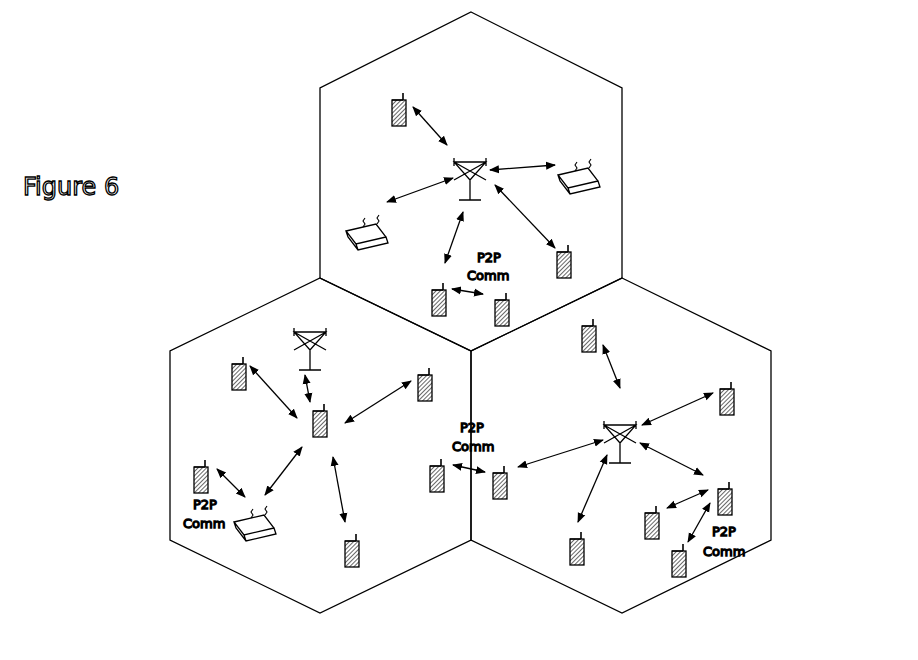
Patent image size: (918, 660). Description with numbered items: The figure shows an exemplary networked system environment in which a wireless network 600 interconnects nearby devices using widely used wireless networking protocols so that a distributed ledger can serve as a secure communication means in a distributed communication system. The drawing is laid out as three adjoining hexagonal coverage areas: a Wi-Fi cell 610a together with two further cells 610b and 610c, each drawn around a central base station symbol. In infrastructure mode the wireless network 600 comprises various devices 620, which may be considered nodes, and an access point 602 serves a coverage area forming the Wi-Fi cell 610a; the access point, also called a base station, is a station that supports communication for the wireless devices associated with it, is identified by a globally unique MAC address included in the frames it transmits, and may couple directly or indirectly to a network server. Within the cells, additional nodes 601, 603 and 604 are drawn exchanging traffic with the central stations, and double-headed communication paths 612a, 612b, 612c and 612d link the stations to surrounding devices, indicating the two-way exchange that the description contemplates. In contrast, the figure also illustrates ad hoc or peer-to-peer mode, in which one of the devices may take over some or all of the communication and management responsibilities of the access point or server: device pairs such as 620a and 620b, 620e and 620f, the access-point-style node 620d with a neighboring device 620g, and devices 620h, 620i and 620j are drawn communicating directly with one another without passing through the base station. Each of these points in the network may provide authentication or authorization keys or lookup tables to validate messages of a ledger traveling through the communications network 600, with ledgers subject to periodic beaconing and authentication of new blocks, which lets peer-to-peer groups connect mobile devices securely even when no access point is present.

The wireless network 600 is at (722, 58).
The user equipment 601 is at (232, 372).
The access point 602 is at (433, 385).
The user equipment 603 is at (360, 547).
The user equipment 604 is at (328, 417).
The Wi-Fi cell 610a is at (465, 159).
The base station 610b is at (306, 328).
The base station 610c is at (626, 417).
The communication link 612a is at (430, 265).
The communication link 612b is at (236, 462).
The communication link 612c is at (502, 447).
The communication link 612d is at (714, 463).
The device 620 is at (392, 105).
The wireless device 620a is at (432, 293).
The wireless device 620b is at (509, 305).
The wireless device (access point) 620d is at (269, 526).
The wireless device 620e is at (431, 487).
The wireless device 620f is at (508, 496).
The wireless device 620g is at (194, 470).
The wireless device 620h is at (733, 497).
The wireless device 620i is at (672, 571).
The wireless device 620j is at (570, 547).